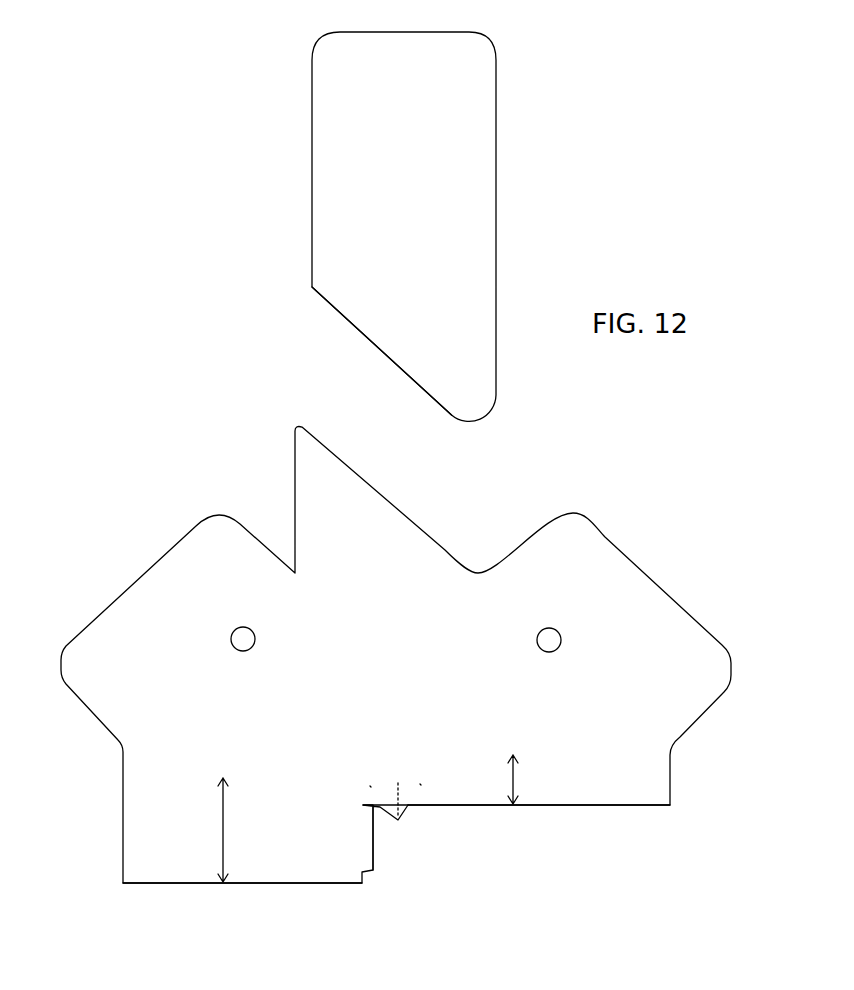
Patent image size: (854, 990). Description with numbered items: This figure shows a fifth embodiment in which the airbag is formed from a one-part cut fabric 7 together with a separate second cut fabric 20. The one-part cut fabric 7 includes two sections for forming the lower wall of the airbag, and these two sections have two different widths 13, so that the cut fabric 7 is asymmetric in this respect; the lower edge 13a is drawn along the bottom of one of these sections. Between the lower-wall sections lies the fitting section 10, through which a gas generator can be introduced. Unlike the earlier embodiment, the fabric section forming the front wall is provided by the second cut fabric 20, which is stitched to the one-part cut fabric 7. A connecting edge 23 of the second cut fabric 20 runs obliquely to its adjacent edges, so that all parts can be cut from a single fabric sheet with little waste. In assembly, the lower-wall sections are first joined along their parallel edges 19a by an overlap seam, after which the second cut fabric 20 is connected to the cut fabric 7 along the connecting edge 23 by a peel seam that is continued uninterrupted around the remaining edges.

The second cut fabric 20 is at (463, 247).
The connecting edge 23 is at (358, 337).
The cut fabric 7 is at (568, 577).
The width 13 is at (225, 823).
The lower edge 13a is at (167, 883).
The edges 19a is at (638, 805).
The fitting section 10 is at (343, 838).